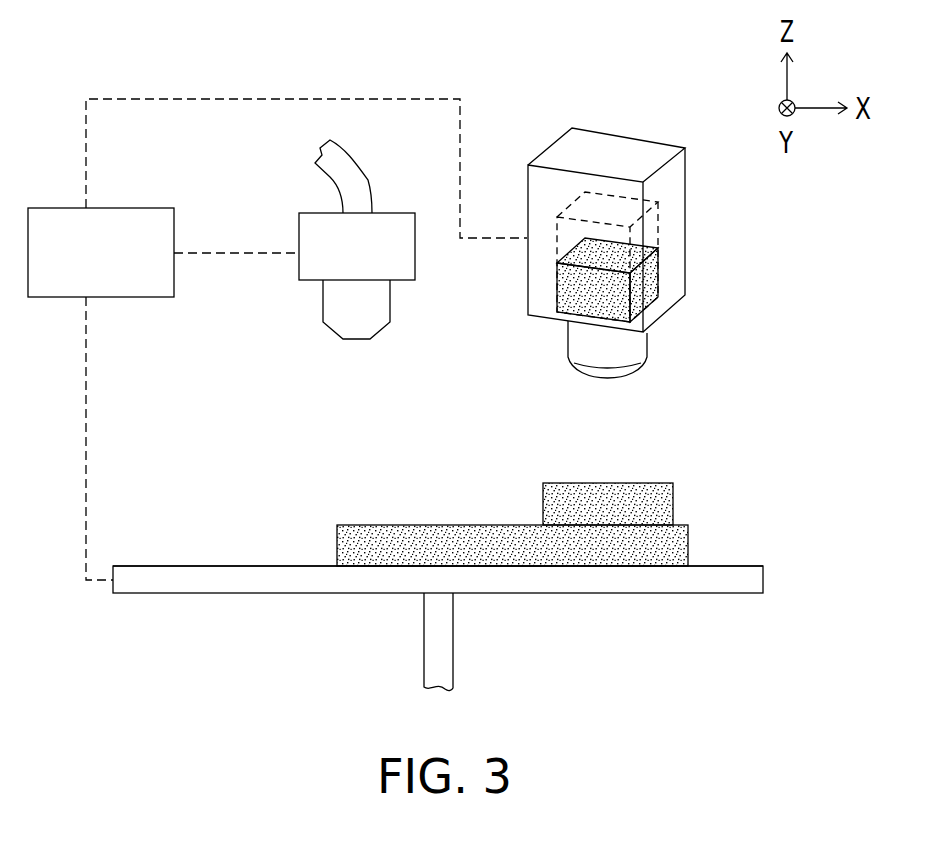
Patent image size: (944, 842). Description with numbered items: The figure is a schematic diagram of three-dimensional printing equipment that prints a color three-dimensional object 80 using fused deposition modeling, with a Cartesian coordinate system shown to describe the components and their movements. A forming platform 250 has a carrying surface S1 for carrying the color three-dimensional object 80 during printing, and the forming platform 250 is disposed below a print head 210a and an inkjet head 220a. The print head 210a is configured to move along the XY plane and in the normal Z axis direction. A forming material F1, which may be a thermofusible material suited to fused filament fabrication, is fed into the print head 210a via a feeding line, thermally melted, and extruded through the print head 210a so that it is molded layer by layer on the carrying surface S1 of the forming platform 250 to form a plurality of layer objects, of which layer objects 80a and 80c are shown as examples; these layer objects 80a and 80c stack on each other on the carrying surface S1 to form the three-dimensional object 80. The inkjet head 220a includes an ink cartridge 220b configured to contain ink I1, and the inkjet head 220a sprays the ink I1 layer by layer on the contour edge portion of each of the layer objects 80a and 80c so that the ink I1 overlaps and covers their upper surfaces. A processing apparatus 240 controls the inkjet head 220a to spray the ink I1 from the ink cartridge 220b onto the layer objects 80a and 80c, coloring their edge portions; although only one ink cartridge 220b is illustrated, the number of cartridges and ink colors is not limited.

The processing apparatus 240 is at (100, 208).
The forming material F1 is at (352, 172).
The print head 210a is at (375, 317).
The ink cartridge 220b is at (658, 230).
The ink I1 is at (660, 287).
The inkjet head 220a is at (633, 350).
The color three-dimensional object 80 is at (571, 486).
The layer object 80a is at (688, 547).
The layer object 80c is at (650, 497).
The carrying surface S1 is at (748, 564).
The forming platform 250 is at (695, 583).